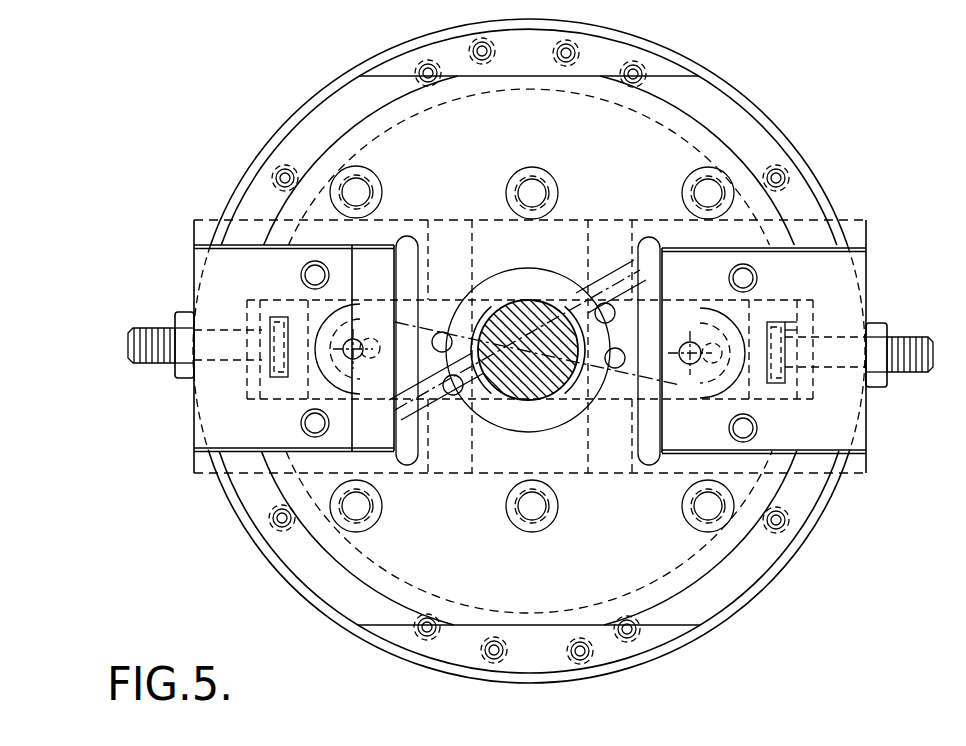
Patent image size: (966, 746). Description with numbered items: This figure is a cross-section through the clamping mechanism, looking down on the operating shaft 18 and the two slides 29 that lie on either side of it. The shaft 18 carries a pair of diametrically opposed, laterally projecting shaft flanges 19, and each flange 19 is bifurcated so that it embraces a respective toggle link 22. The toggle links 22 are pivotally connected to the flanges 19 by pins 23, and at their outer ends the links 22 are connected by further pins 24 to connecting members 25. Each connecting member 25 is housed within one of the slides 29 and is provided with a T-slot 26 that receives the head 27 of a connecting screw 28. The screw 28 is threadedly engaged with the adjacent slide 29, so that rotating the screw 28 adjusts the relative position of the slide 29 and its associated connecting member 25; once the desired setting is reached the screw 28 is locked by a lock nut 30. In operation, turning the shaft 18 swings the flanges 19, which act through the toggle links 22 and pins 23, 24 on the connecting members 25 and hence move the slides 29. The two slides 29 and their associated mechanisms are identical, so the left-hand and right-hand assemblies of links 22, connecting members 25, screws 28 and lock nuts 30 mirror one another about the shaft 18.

The operating shaft 18 is at (513, 335).
The shaft flanges 19 is at (590, 276).
The toggle links 22 is at (427, 228).
The pins 23 is at (607, 304).
The further pins 24 is at (368, 340).
The connecting members 25 is at (340, 393).
The T-slot 26 is at (280, 380).
The head 27 is at (278, 320).
The connecting screw 28 is at (143, 330).
The slides 29 is at (194, 438).
The lock nuts 30 is at (176, 377).